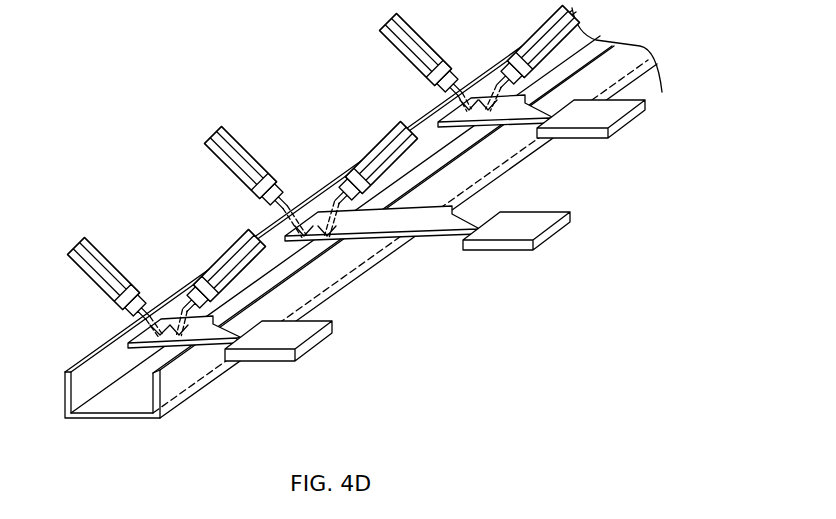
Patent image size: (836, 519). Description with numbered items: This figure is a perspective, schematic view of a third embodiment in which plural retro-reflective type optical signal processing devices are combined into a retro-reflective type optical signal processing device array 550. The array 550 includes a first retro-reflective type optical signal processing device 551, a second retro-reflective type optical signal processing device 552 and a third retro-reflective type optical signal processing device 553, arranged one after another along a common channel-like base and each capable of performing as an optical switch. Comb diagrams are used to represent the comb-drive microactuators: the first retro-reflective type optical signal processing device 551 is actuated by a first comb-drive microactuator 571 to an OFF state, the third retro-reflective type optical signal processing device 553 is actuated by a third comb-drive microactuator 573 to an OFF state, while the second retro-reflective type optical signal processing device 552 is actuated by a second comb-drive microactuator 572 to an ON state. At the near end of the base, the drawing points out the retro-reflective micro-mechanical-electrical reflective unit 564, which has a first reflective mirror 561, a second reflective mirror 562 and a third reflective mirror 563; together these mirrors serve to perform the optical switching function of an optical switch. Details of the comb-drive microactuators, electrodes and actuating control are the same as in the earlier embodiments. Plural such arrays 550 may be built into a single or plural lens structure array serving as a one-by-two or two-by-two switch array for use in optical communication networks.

The retro-reflective type optical signal processing device array 550 is at (146, 101).
The first retro-reflective type optical signal processing device 551 is at (80, 239).
The second retro-reflective type optical signal processing device 552 is at (202, 128).
The third retro-reflective type optical signal processing device 553 is at (378, 17).
The first reflective mirror 561 is at (152, 397).
The second reflective mirror 562 is at (85, 381).
The third reflective mirror 563 is at (113, 400).
The retro-reflective micro-mechanical-electrical reflective unit 564 is at (38, 301).
The first comb-drive microactuator 571 is at (283, 352).
The second comb-drive microactuator 572 is at (519, 246).
The third comb-drive microactuator 573 is at (589, 130).